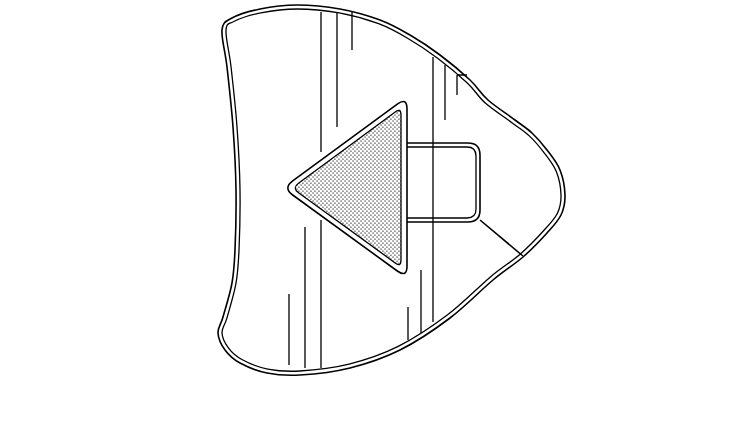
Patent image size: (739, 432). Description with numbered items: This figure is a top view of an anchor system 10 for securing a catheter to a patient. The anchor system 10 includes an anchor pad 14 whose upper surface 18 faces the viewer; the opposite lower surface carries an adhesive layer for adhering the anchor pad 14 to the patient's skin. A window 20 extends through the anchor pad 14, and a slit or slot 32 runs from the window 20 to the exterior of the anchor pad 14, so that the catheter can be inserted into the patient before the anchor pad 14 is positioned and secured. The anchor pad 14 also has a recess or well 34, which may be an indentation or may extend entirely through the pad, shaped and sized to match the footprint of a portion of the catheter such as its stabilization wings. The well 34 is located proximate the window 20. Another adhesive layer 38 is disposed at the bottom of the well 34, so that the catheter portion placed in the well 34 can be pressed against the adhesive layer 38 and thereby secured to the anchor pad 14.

The anchor system 10 is at (140, 30).
The anchor pad 14 is at (236, 40).
The upper surface 18 is at (378, 346).
The window 20 is at (480, 192).
The slot 32 is at (513, 232).
The well 34 is at (388, 115).
The adhesive layer 38 is at (373, 199).